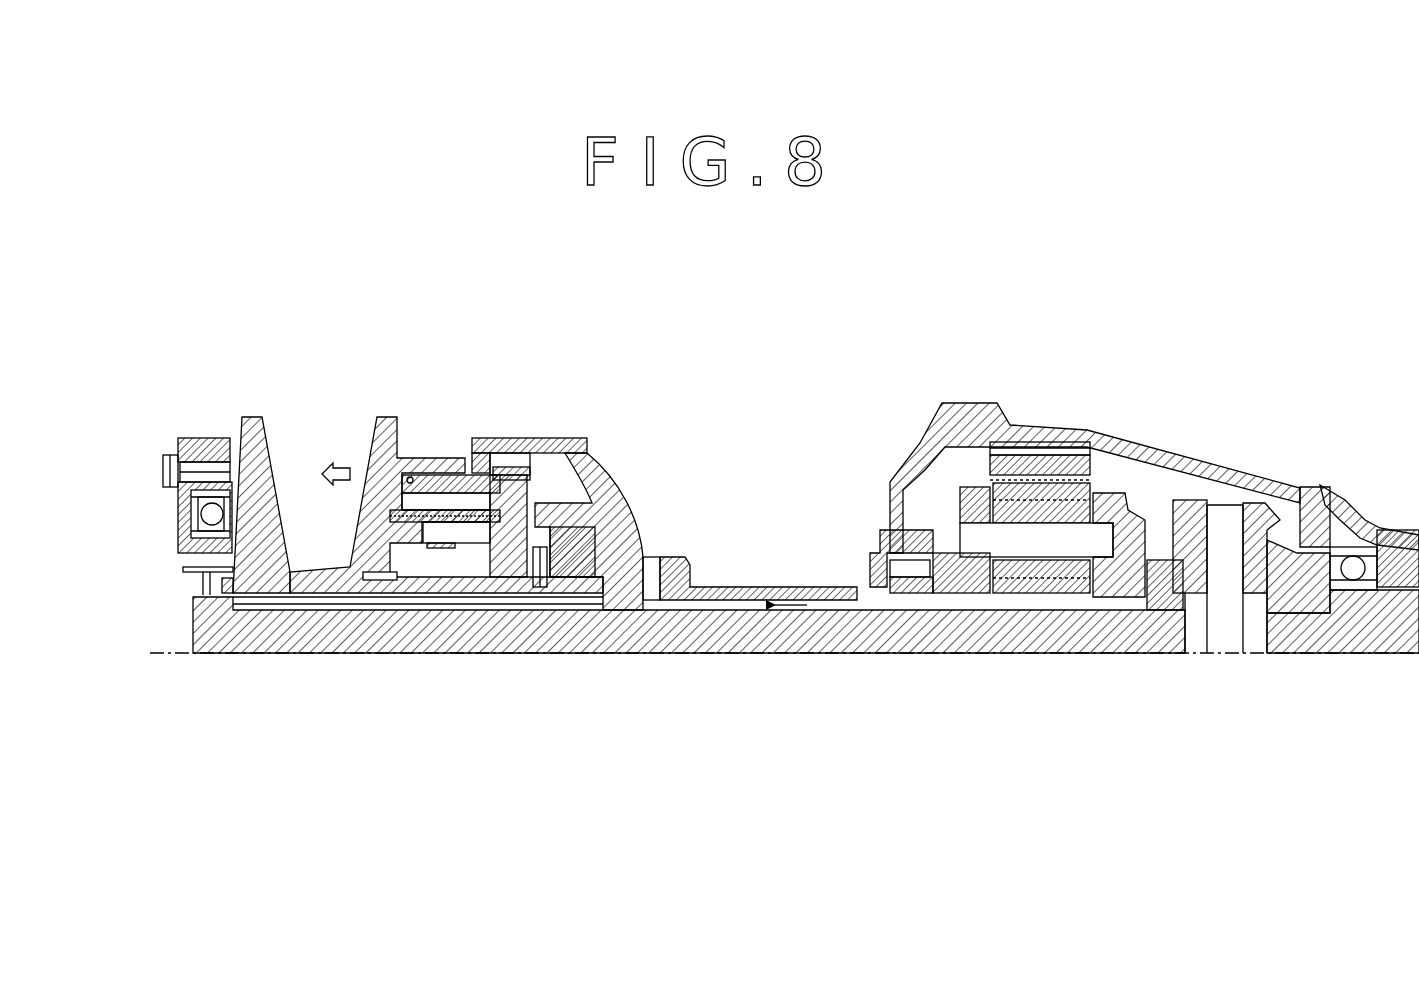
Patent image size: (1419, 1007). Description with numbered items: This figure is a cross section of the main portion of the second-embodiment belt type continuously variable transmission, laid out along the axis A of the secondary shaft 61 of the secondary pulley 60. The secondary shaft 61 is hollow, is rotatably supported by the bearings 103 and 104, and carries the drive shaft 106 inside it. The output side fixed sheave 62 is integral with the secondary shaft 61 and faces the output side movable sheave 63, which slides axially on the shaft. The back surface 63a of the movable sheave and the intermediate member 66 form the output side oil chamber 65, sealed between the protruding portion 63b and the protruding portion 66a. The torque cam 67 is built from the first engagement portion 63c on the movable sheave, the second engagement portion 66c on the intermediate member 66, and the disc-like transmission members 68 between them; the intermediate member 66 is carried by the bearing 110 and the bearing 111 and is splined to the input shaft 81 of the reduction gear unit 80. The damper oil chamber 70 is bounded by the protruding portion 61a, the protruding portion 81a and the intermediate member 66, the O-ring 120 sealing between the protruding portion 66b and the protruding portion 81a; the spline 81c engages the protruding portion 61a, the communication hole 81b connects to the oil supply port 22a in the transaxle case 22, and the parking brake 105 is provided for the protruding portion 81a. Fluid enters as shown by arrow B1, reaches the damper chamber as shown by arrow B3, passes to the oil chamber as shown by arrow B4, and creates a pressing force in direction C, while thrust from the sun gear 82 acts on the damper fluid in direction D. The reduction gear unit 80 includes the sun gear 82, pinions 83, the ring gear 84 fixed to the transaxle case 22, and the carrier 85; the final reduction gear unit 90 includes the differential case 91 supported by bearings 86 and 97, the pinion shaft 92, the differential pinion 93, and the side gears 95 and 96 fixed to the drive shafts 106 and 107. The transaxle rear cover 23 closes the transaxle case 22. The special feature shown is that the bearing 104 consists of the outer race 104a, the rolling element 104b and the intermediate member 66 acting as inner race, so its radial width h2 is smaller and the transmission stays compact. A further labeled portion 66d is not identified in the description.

The transaxle case 22 is at (965, 410).
The oil supply port 22a is at (680, 567).
The transaxle rear cover 23 is at (205, 440).
The secondary pulley 60 is at (315, 392).
The secondary shaft 61 is at (273, 657).
The protruding portion 61a is at (560, 640).
The output side fixed sheave 62 is at (255, 418).
The output side movable sheave 63 is at (380, 420).
The back surface 63a is at (400, 417).
The ring-shaped protruding portion 63b is at (420, 458).
The first engagement portion 63c is at (390, 548).
The output side oil chamber 65 is at (407, 507).
The intermediate member 66 is at (542, 437).
The ring-shaped protruding portion 66a is at (420, 475).
The ring-shaped protruding portion 66b is at (585, 530).
The second engagement portion 66c is at (352, 657).
The piston portion 66d is at (487, 635).
The torque cam 67 is at (445, 505).
The transmission members 68 is at (440, 527).
The damper oil chamber 70 is at (653, 570).
The reduction gear unit 80 is at (923, 453).
The input shaft 81 is at (873, 612).
The protruding portion 81a is at (620, 517).
The communication hole 81b is at (667, 640).
The spline 81c is at (580, 455).
The sun gear 82 is at (983, 600).
The pinions 83 is at (1100, 470).
The ring gear 84 is at (1050, 462).
The carrier 85 is at (965, 500).
The bearing 86 is at (880, 560).
The final reduction gear unit 90 is at (1300, 508).
The differential case 91 is at (1188, 503).
The pinion shaft 92 is at (1222, 515).
The differential pinion 93 is at (1255, 500).
The side gear 95 is at (1160, 612).
The side gear 96 is at (1288, 612).
The bearing 97 is at (1352, 553).
The bearing 103 is at (180, 512).
The bearing 104 is at (510, 437).
The outer race 104a is at (512, 434).
The rolling element 104b is at (528, 437).
The parking brake 105 is at (560, 467).
The drive shaft 106 is at (747, 657).
The drive shaft 107 is at (1372, 657).
The bearing 110 is at (437, 657).
The bearing 111 is at (533, 640).
The O-ring 120 is at (570, 520).
The axis A is at (703, 657).
The arrow B1 is at (660, 553).
The arrow B3 is at (620, 640).
The arrow B4 is at (493, 640).
The arrow C is at (342, 463).
The arrow D is at (795, 600).
The radial direction width h2 is at (471, 458).